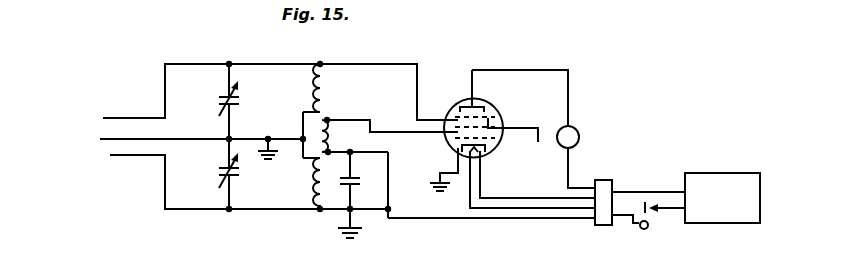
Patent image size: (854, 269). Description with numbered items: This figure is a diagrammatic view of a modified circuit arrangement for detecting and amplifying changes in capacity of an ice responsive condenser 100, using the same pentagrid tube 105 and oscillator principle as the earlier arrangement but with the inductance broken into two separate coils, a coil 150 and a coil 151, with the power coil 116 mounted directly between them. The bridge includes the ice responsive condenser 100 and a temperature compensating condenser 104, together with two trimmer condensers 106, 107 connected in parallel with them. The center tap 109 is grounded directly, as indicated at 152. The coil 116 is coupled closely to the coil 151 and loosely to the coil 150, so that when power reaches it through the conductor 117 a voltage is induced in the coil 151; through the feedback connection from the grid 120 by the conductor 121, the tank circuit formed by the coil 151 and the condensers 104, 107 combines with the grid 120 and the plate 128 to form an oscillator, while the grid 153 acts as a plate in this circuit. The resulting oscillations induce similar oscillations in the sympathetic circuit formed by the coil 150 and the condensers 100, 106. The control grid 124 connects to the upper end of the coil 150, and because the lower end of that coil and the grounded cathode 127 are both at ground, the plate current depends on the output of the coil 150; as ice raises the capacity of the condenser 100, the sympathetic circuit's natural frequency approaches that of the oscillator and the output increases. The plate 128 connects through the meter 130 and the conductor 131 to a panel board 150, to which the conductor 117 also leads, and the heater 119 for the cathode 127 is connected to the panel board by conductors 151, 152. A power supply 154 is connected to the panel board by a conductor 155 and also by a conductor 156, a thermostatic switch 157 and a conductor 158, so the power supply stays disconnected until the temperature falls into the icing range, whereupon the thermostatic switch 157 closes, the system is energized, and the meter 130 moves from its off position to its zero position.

The ice responsive condenser 100 is at (112, 127).
The temperature compensating condenser 104 is at (118, 145).
The pentagrid vacuum tube 105 is at (486, 158).
The trimmer condenser 106 is at (237, 98).
The trimmer condenser 107 is at (246, 174).
The center tap 109 is at (282, 137).
The coil 116 is at (329, 136).
The conductor 117 is at (440, 220).
The heater 119 is at (456, 153).
The grid 120 is at (496, 129).
The conductor 121 is at (389, 176).
The control grid 124 is at (489, 112).
The cathode 127 is at (498, 150).
The plate 128 is at (461, 105).
The meter 130 is at (581, 134).
The conductor 131 is at (571, 163).
The coil 150 is at (328, 98).
The coil 151 is at (318, 197).
The ground connection 152 is at (273, 148).
The grid 153 is at (458, 110).
The power supply 154 is at (700, 173).
The conductor 155 is at (640, 192).
The conductor 156 is at (683, 211).
The thermostatic switch 157 is at (650, 212).
The conductor 158 is at (632, 203).